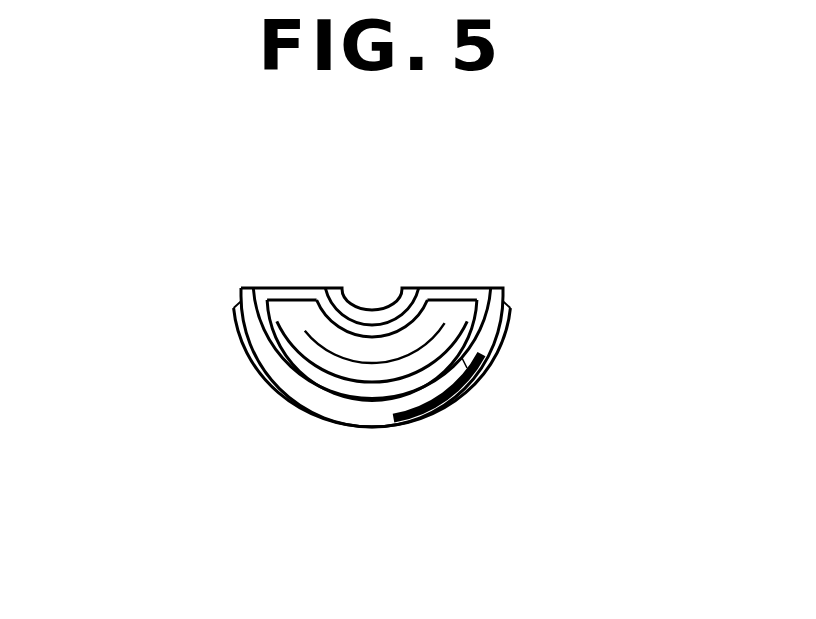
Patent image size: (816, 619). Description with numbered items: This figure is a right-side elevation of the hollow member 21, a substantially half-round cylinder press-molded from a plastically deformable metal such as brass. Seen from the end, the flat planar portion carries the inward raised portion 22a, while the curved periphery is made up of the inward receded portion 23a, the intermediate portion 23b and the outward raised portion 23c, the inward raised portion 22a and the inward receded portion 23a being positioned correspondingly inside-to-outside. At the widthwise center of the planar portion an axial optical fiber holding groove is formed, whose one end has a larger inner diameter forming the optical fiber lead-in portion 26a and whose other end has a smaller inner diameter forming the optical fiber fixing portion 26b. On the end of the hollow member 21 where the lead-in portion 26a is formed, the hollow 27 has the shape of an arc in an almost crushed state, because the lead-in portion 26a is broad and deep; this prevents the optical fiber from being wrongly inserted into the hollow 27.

The hollow member 21 is at (198, 298).
The inward raised portion 22a is at (457, 290).
The inward receded portion 23a is at (483, 368).
The intermediate portion 23b is at (505, 342).
The outward raised portion 23c is at (397, 428).
The optical fiber lead-in portion 26a is at (346, 296).
The optical fiber fixing portion 26b is at (383, 305).
The hollow 27 is at (330, 352).